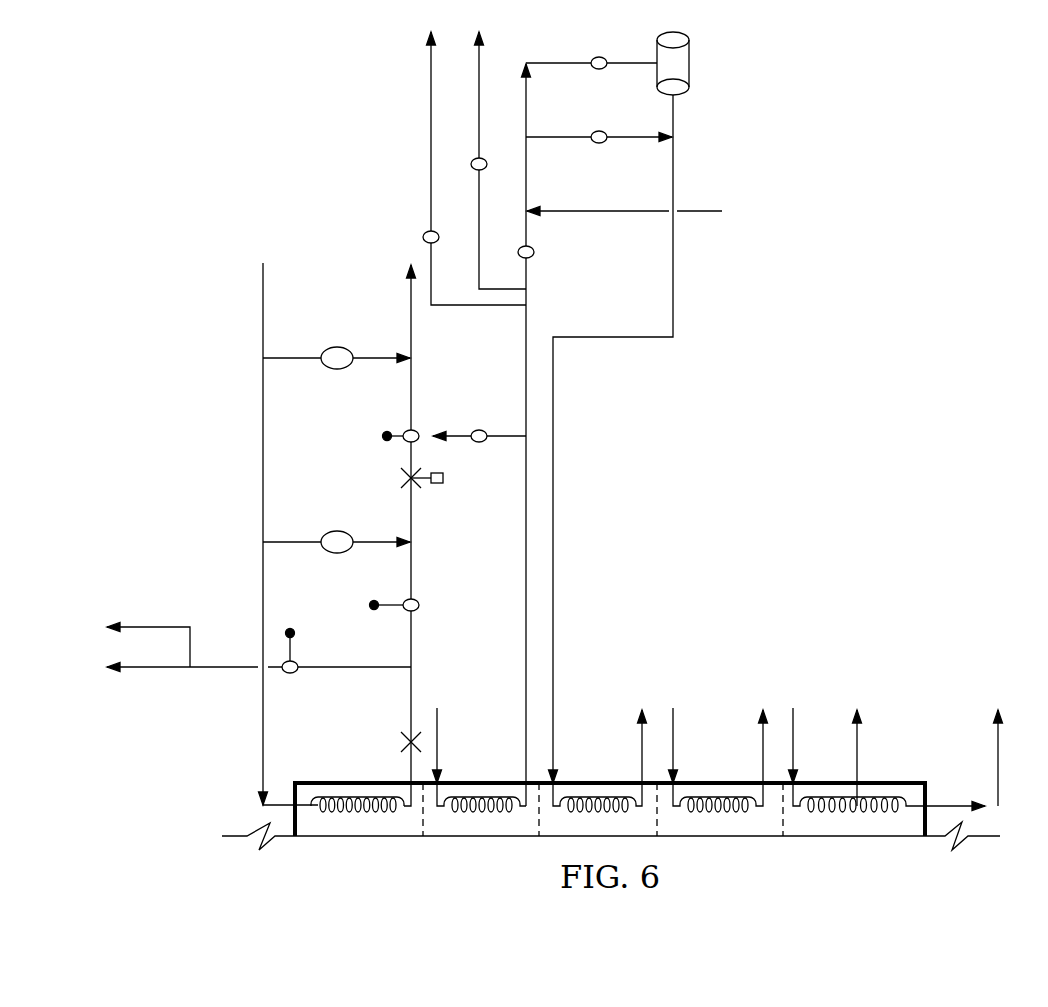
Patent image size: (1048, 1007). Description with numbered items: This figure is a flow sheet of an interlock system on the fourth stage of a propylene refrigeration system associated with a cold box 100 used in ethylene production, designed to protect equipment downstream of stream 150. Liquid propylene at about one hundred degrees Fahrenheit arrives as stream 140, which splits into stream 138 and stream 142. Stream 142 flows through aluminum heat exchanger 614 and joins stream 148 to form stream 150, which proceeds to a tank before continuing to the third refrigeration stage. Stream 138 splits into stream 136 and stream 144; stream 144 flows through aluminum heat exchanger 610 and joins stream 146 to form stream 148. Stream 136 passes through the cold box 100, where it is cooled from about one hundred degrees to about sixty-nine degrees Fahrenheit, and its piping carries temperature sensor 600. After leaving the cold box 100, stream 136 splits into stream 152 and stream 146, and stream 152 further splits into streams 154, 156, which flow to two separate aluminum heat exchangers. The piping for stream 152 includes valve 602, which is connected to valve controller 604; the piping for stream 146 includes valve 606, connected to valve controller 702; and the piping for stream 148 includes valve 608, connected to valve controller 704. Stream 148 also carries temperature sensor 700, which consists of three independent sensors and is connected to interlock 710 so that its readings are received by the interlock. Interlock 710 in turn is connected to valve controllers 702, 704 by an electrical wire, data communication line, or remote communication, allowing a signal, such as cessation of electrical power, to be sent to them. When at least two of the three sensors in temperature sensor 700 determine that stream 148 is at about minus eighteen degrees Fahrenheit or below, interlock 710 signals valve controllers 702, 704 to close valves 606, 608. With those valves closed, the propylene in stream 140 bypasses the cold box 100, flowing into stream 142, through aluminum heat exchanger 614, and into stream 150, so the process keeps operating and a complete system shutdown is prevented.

The cold box 100 is at (892, 777).
The stream 136 is at (262, 732).
The stream 138 is at (262, 510).
The stream 140 is at (262, 310).
The stream 142 is at (383, 357).
The stream 144 is at (308, 540).
The stream 146 is at (407, 563).
The stream 148 is at (413, 375).
The stream 150 is at (410, 293).
The stream 152 is at (377, 670).
The stream 154 is at (155, 625).
The stream 156 is at (153, 670).
The temperature sensor 600 is at (402, 747).
The valve 602 is at (297, 673).
The valve controller 604 is at (292, 630).
The valve 606 is at (418, 603).
The valve 608 is at (417, 430).
The aluminum heat exchanger 610 is at (343, 532).
The aluminum heat exchanger 614 is at (333, 348).
The temperature sensor 700 is at (400, 472).
The valve controller 702 is at (373, 610).
The valve controller 704 is at (385, 433).
The interlock 710 is at (443, 482).